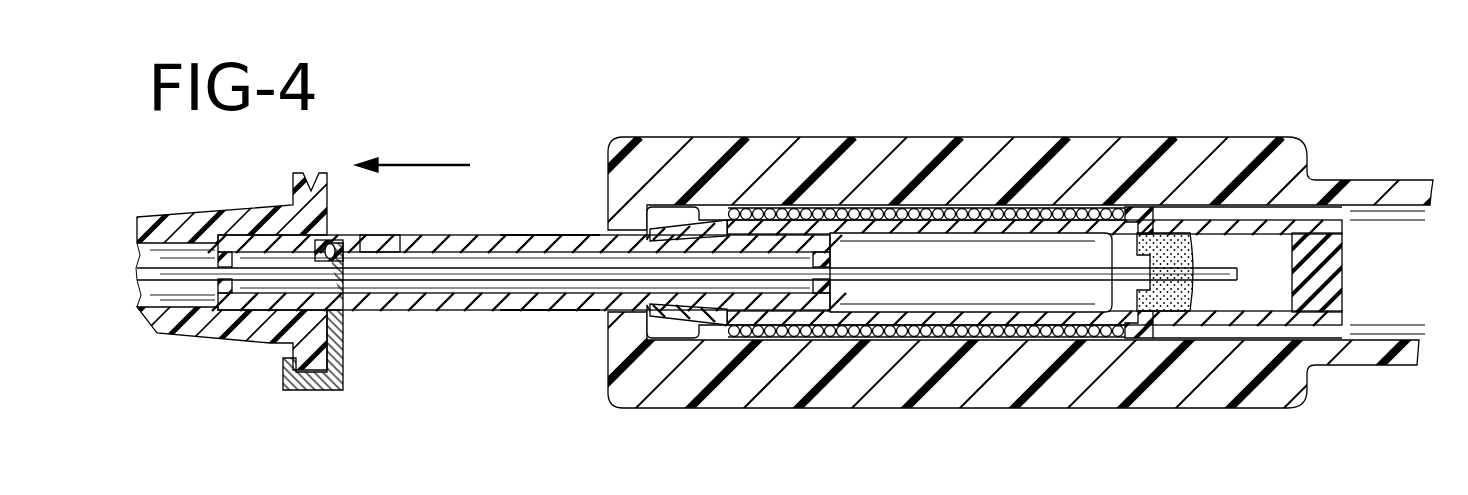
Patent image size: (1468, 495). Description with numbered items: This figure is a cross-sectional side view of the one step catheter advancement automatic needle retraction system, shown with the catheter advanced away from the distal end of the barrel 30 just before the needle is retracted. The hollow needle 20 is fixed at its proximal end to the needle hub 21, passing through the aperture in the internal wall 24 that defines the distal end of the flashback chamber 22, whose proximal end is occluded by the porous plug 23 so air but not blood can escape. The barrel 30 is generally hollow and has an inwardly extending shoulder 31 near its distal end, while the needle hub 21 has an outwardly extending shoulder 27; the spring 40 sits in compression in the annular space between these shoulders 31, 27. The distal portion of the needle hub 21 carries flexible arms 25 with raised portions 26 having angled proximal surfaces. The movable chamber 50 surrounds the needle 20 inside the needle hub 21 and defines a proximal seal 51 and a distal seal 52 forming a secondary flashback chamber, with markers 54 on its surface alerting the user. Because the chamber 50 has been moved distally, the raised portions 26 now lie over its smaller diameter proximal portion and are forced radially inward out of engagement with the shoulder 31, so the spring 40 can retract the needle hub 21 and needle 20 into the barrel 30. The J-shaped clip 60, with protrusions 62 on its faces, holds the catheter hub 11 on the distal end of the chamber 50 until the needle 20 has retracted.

The catheter hub 11 is at (230, 215).
The hollow needle 20 is at (200, 292).
The needle hub 21 is at (1220, 326).
The flashback chamber 22 is at (1272, 250).
The porous plug 23 is at (1338, 282).
The internal wall 24 is at (1150, 246).
The flexible arms 25 is at (662, 230).
The raised portions 26 is at (710, 212).
The outwardly extending shoulder 27 is at (1155, 226).
The barrel 30 is at (895, 402).
The inwardly extending shoulder 31 is at (750, 222).
The spring 40 is at (1010, 212).
The movable chamber 50 is at (458, 235).
The proximal seal 51 is at (862, 248).
The distal seal 52 is at (380, 238).
The markers 54 is at (546, 235).
The J-shaped clip 60 is at (310, 391).
The protrusions 62 is at (333, 240).